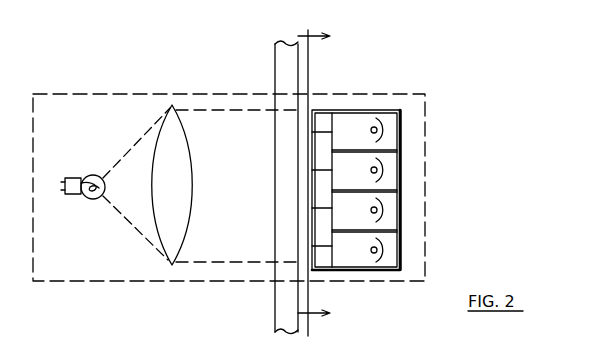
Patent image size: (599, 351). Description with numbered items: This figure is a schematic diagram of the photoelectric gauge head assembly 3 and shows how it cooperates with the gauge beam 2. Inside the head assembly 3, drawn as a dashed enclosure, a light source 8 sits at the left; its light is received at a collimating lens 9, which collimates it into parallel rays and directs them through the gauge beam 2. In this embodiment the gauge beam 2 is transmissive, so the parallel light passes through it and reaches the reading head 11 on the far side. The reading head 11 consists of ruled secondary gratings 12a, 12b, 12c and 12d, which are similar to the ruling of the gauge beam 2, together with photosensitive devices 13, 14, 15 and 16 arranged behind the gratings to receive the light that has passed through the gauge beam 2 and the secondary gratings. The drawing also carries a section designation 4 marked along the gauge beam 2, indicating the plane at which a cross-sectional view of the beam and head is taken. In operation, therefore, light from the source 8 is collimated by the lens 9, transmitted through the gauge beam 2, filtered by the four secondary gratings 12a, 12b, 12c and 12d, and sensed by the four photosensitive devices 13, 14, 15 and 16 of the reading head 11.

The gauge beam 2 is at (275, 54).
The head assembly 3 is at (356, 186).
The section line 4- 4 is at (313, 26).
The light source 8 is at (86, 198).
The collimating lens 9 is at (183, 207).
The reading head 11 is at (356, 200).
The ruled secondary grating 12a is at (320, 135).
The ruled secondary grating 12b is at (320, 167).
The ruled secondary grating 12c is at (320, 205).
The ruled secondary grating 12d is at (320, 243).
The photosensitive device 13 is at (383, 132).
The photosensitive device 14 is at (383, 172).
The photosensitive device 15 is at (383, 212).
The photosensitive device 16 is at (379, 258).